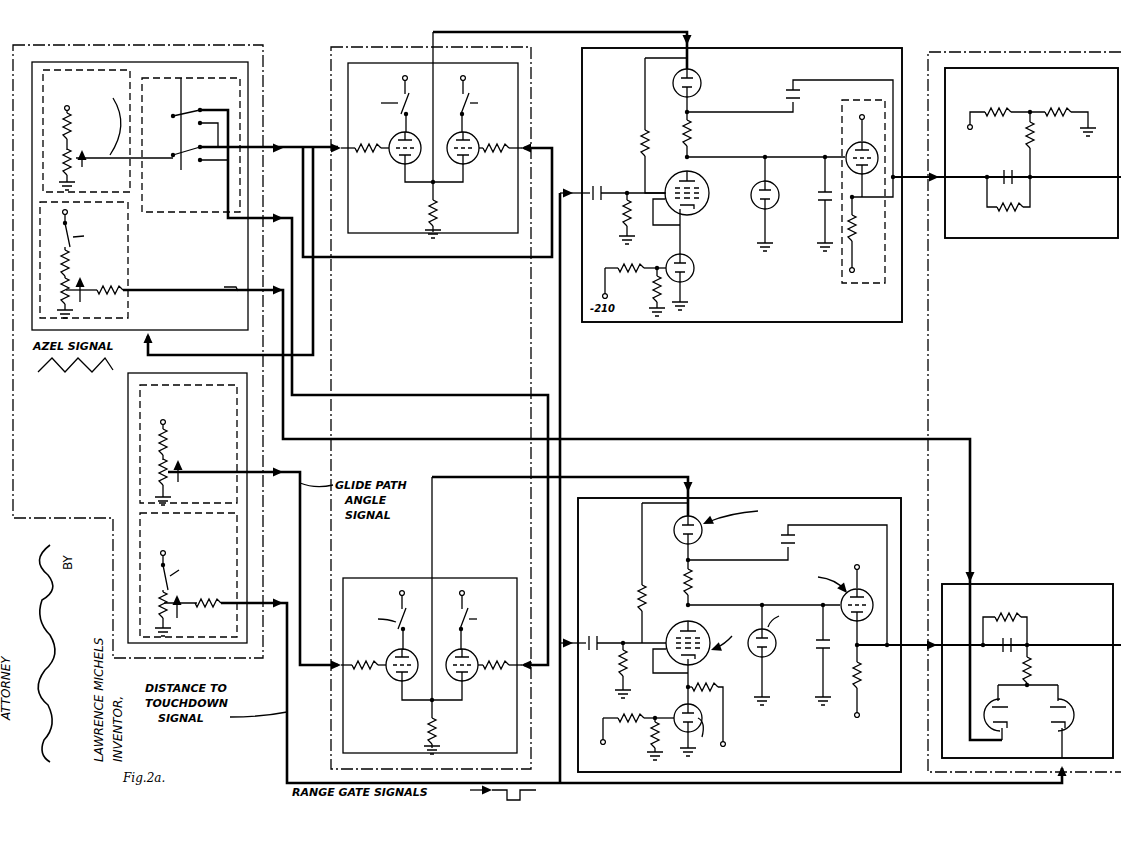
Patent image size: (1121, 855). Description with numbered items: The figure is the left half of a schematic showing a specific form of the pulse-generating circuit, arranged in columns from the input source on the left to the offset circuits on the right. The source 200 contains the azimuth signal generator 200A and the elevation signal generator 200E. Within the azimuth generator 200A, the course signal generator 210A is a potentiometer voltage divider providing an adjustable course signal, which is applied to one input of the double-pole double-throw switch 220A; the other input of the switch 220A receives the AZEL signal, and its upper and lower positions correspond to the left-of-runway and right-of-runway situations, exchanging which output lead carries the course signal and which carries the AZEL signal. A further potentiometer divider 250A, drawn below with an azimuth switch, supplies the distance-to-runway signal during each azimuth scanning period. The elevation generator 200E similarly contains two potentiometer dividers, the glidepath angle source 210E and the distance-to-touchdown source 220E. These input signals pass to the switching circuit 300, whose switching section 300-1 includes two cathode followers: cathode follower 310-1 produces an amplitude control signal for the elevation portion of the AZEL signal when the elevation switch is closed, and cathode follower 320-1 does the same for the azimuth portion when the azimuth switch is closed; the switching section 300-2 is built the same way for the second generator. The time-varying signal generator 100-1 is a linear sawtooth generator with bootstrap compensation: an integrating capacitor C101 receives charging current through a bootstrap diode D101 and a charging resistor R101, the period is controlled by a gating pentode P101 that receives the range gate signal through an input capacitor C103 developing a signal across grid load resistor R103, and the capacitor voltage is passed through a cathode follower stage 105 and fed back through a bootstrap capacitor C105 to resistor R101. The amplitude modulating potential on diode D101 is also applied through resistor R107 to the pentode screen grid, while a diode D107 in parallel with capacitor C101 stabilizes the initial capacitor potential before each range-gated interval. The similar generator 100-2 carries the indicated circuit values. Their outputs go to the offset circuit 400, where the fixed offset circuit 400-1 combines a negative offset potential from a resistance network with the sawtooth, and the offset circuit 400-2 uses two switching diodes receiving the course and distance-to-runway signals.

The source 200 is at (96, 46).
The azimuth signal generator 200A is at (185, 62).
The course signal generator 210A is at (128, 70).
The double-pole double-throw switch 220A is at (200, 78).
The distance to runway signal generator 250A is at (128, 233).
The elevation signal generator 200E is at (128, 453).
The glidepath angle signal source 210E is at (140, 408).
The distance-to-touchdown signal source 220E is at (140, 523).
The switching circuit 300 is at (395, 47).
The switching section 300-1 is at (403, 233).
The cathode follower 310-1 is at (385, 170).
The cathode follower 320-1 is at (481, 170).
The switching section 300-2 is at (443, 578).
The time-varying signal generator 100-1 is at (774, 49).
The time-varying signal generator 100-2 is at (727, 498).
The cathode follower stage 105 is at (842, 286).
The offset circuit 400 is at (1003, 52).
The fixed offset circuit 400-1 is at (1008, 238).
The offset circuit 400-2 is at (1020, 576).
The bootstrap diode D101 is at (702, 82).
The charging resistor R101 is at (696, 127).
The resistor R107 is at (641, 141).
The bootstrap capacitor C105 is at (797, 101).
The input capacitor C103 is at (612, 187).
The grid load resistor R103 is at (623, 221).
The gating pentode P101 is at (700, 213).
The diode D107 is at (770, 180).
The integrating capacitor C101 is at (822, 208).